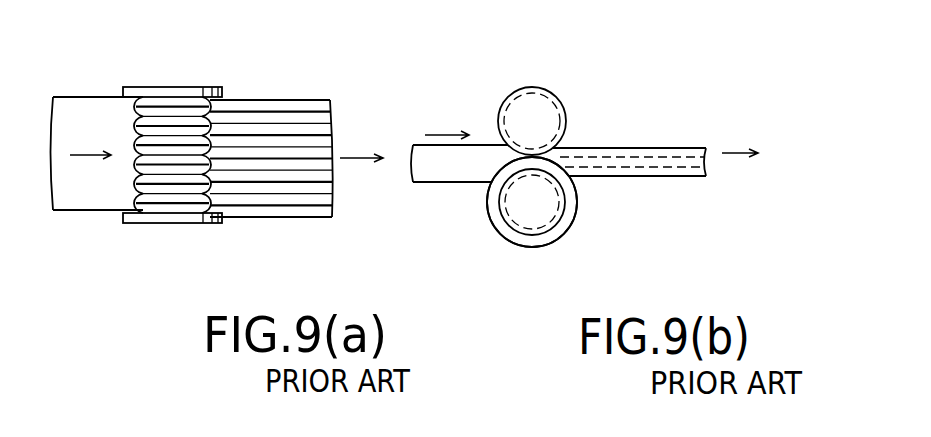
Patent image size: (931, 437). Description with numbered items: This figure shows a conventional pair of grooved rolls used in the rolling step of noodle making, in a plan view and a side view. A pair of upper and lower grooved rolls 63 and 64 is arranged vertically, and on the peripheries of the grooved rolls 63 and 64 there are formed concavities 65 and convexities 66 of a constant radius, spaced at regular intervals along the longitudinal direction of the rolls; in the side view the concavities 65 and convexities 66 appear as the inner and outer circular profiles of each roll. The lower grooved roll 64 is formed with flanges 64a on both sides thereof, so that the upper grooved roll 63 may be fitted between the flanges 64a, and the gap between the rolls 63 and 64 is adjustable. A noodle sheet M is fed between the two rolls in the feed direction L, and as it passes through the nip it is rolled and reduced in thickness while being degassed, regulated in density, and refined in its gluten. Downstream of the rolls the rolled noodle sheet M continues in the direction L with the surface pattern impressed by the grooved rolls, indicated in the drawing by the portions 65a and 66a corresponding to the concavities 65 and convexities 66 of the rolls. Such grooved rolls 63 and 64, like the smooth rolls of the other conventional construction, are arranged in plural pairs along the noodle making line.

In FIG. 9A, the upper grooved roll 63 is at (180, 80).
In FIG. 9B, the upper grooved roll 63 is at (498, 90).
In FIG. 9B, the lower grooved roll 64 is at (491, 246).
In FIG. 9B, the flanges 64a is at (488, 200).
In FIG. 9A, the concavities 65 is at (145, 180).
In FIG. 9B, the concavities 65 is at (562, 108).
In FIG. 9A, the convexities 66 is at (205, 190).
In FIG. 9B, the convexities 66 is at (518, 88).
In FIG. 9B, the upper layer of material 65a is at (617, 148).
In FIG. 9B, the lower layer of material 66a is at (662, 176).
In FIG. 9A, the noodle sheet M is at (285, 88).
In FIG. 9B, the noodle sheet M is at (676, 125).
In FIG. 9A, the feed direction L is at (361, 143).
In FIG. 9B, the feed direction L is at (740, 139).